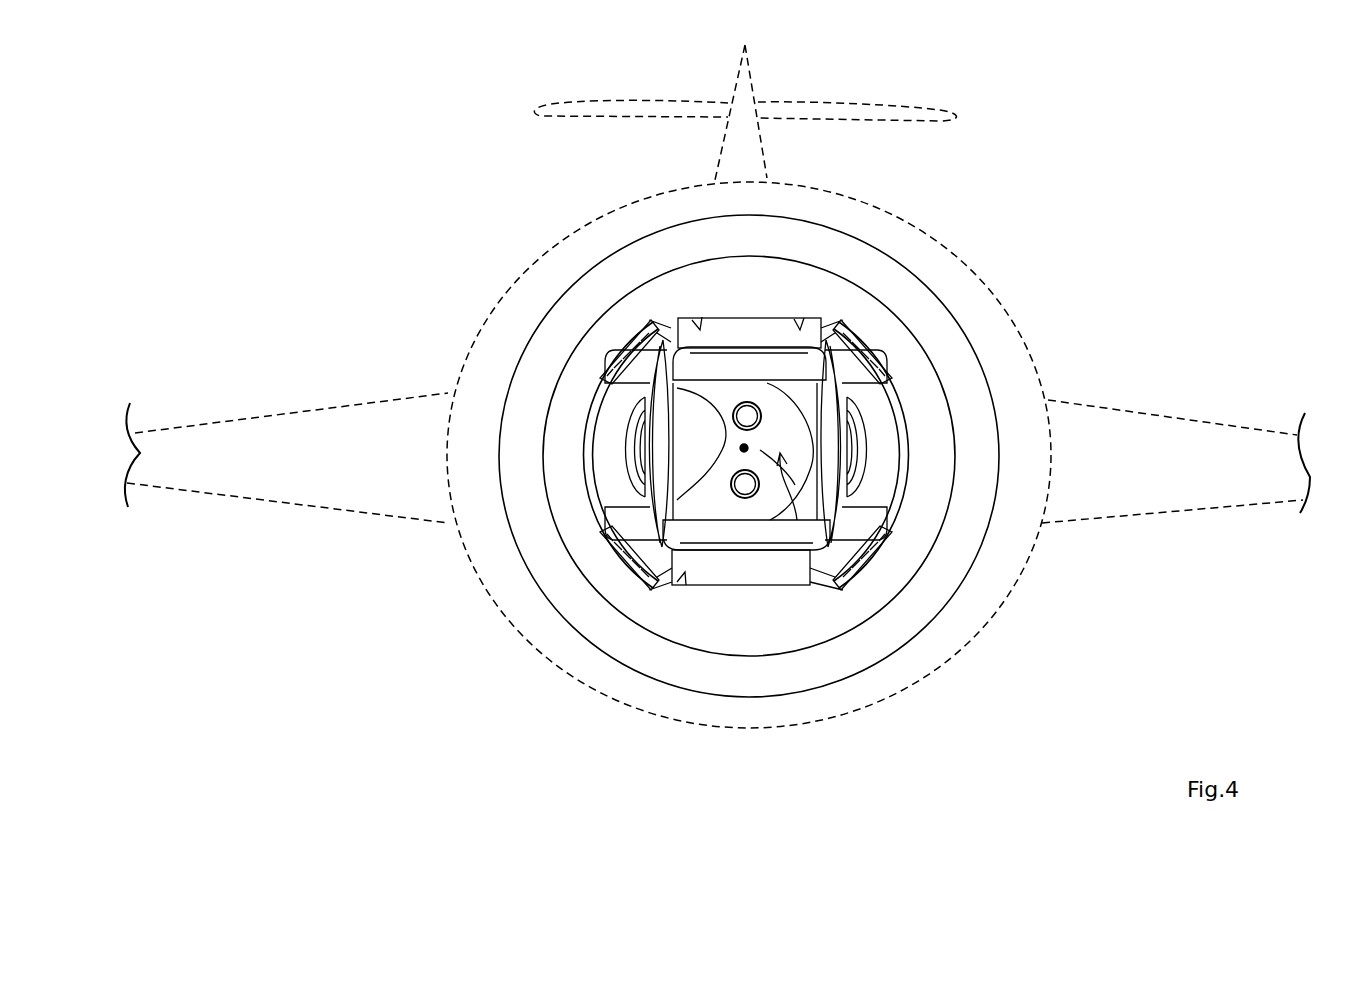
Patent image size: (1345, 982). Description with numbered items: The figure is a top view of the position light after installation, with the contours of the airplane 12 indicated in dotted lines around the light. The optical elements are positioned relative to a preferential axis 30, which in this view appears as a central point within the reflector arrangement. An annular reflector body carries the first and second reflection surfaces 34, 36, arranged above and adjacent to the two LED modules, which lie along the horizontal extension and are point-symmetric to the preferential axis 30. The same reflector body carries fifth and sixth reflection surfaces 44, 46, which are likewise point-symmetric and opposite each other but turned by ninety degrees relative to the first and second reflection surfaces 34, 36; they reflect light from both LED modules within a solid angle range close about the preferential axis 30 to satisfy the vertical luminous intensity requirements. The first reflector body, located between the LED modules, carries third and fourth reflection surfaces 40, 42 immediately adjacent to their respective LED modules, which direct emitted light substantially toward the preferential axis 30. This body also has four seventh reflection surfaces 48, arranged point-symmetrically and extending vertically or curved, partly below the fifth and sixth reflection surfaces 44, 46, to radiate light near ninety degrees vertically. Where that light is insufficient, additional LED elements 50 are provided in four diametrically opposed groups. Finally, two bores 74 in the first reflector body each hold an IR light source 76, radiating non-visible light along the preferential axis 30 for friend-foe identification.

The airplane 12 is at (1036, 358).
The preferential axis 30 is at (746, 446).
The first reflection surface 34 is at (823, 378).
The second reflection surface 36 is at (630, 400).
The third reflection surface 40 is at (778, 567).
The fourth reflection surface 42 is at (712, 452).
The fifth reflection surface 44 is at (729, 531).
The sixth reflection surface 46 is at (745, 362).
The seventh reflection surfaces 48 is at (700, 330).
The LED elements 50 is at (632, 338).
The bores 74 is at (733, 405).
The IR light source 76 is at (747, 416).